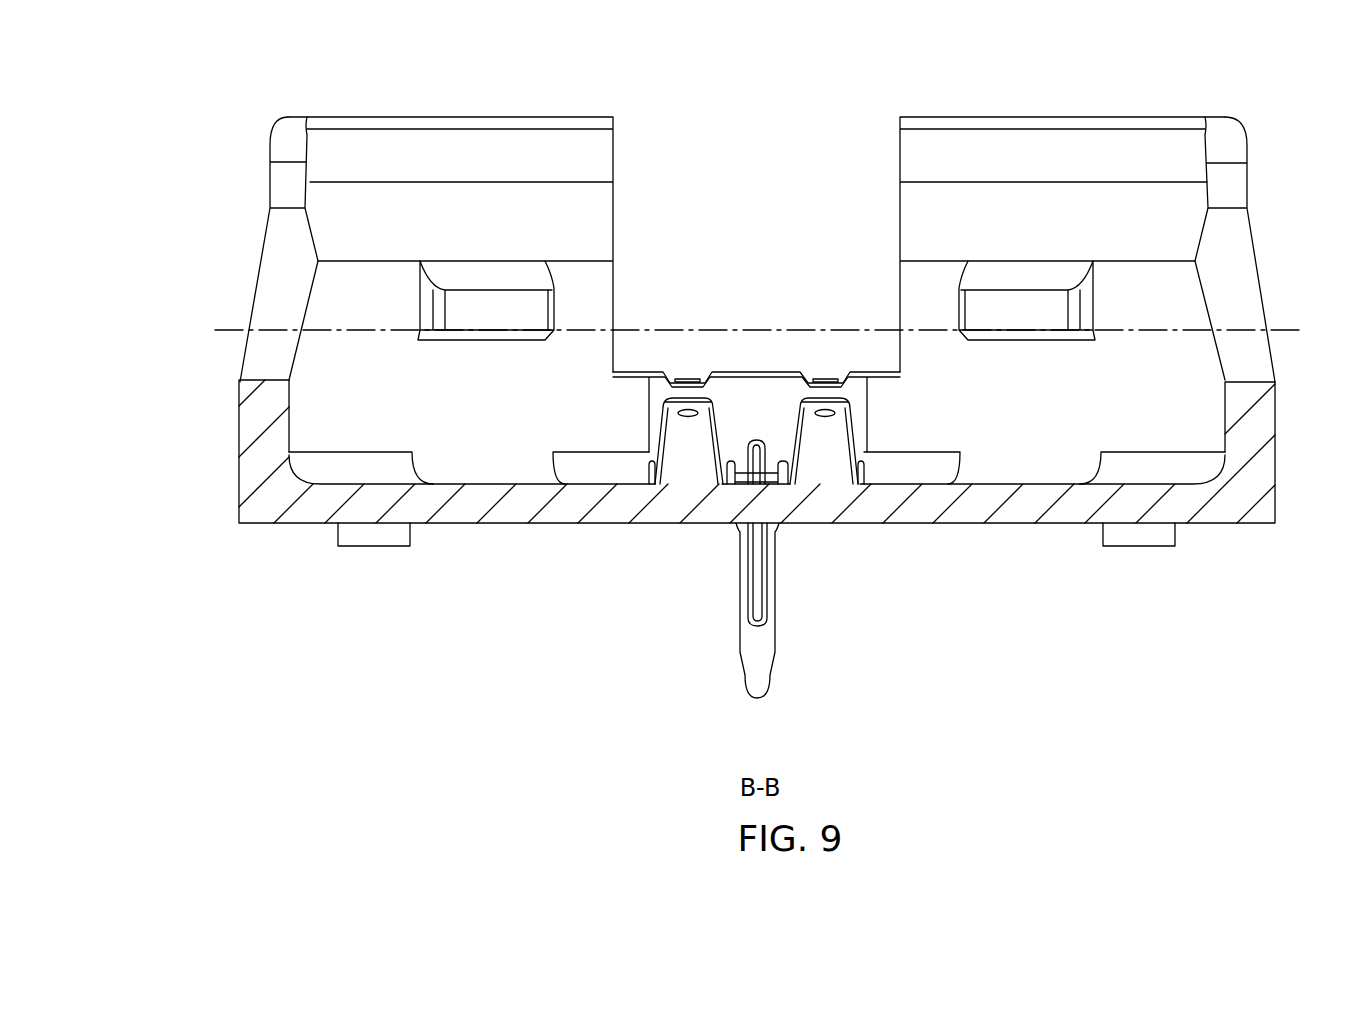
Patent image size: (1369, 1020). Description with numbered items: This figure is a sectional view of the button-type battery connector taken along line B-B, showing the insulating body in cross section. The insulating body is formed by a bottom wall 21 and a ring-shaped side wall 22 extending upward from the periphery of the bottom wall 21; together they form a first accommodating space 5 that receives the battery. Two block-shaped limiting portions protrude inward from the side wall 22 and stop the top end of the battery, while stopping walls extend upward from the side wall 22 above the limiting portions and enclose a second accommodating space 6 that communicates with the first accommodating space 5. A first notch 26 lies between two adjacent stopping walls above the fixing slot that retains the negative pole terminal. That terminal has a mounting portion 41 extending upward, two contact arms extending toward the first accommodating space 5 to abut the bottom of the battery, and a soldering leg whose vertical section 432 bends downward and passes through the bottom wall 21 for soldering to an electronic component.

The first accommodating space 5 is at (462, 428).
The second accommodating space 6 is at (562, 227).
The bottom wall 21 is at (565, 505).
The side wall 22 is at (242, 442).
The first notch 26 is at (900, 210).
The mounting portion 41 is at (743, 392).
The vertical section 432 is at (772, 585).